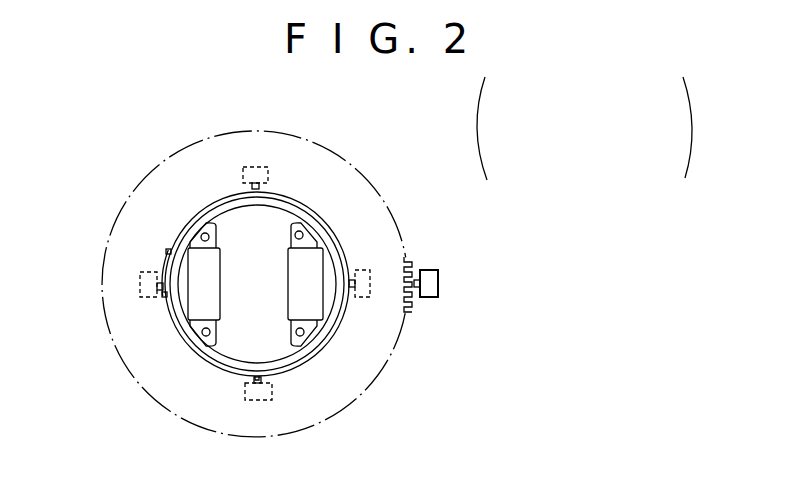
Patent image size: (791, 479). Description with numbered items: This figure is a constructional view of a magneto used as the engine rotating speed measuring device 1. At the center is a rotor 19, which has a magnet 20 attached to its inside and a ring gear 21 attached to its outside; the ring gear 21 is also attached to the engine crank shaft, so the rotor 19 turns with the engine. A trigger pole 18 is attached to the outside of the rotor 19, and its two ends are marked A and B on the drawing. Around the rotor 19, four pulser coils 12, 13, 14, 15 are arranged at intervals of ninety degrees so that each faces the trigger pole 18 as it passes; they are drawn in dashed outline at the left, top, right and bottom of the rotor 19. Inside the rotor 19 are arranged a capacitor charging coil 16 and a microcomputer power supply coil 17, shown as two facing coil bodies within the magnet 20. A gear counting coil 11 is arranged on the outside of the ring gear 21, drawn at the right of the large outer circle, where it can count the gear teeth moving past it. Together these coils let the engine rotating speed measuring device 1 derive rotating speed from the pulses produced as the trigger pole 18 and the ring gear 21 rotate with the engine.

The engine rotating speed measuring device 1 is at (385, 143).
The gear counting coil 11 is at (440, 283).
The pulser coil 12 is at (146, 298).
The pulser coil 13 is at (244, 166).
The pulser coil 14 is at (362, 297).
The pulser coil 15 is at (245, 396).
The capacitor charging coil 16 is at (210, 295).
The microcomputer power supply coil 17 is at (302, 293).
The trigger pole 18 is at (166, 257).
The rotor 19 is at (323, 223).
The magnet 20 is at (323, 337).
The ring gear 21 is at (378, 239).
The gap end A is at (173, 251).
The gap end B is at (170, 298).